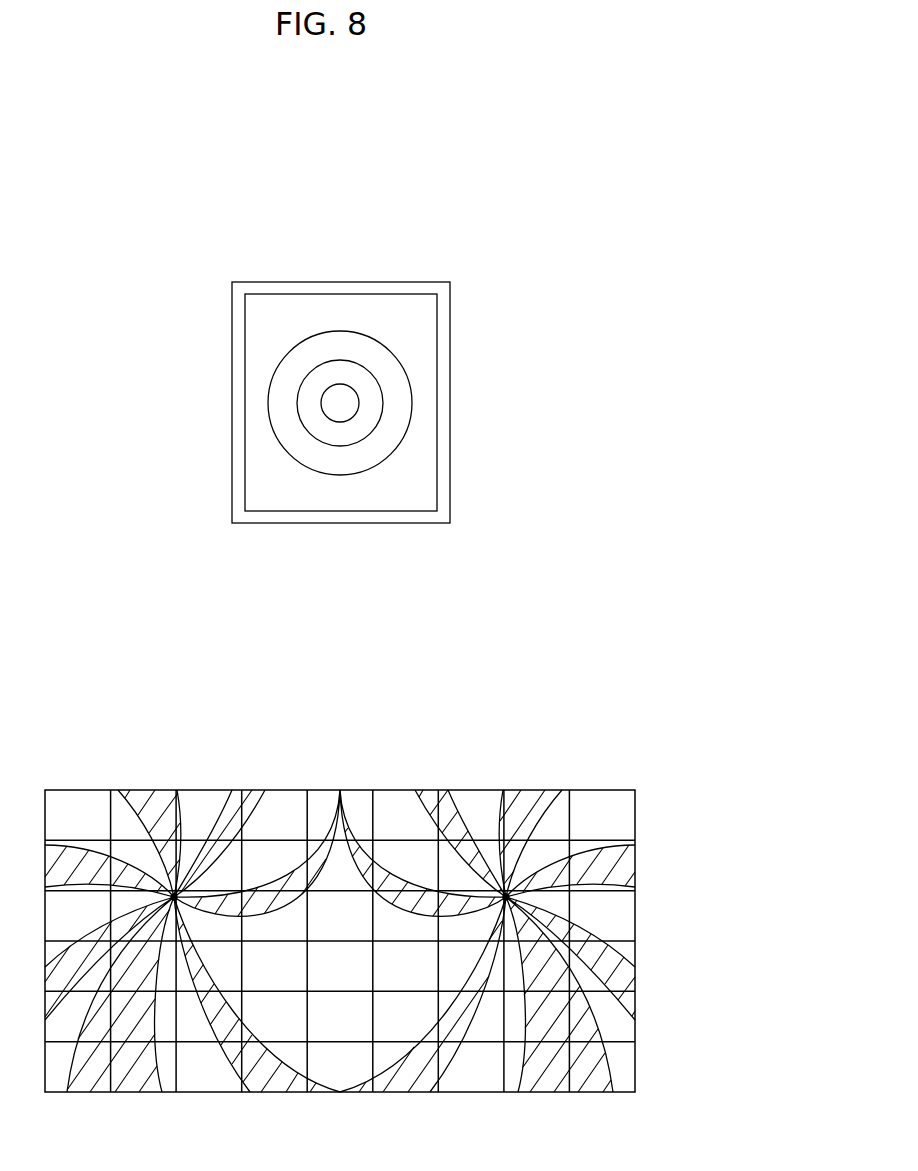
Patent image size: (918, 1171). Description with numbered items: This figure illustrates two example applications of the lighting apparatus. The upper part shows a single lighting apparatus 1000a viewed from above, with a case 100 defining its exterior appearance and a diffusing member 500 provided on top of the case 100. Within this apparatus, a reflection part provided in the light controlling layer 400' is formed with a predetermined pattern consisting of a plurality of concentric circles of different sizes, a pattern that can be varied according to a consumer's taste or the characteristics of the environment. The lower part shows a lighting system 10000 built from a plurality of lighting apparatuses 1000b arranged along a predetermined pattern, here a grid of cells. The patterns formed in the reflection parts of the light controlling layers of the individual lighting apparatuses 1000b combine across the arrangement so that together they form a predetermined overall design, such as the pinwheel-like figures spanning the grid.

The lighting apparatus 1000a is at (200, 261).
The case 100 is at (445, 337).
The diffusing member 500 is at (388, 308).
The light controlling layer 400' is at (419, 423).
The lighting system 10000 is at (165, 751).
The lighting apparatus 1000b is at (540, 790).